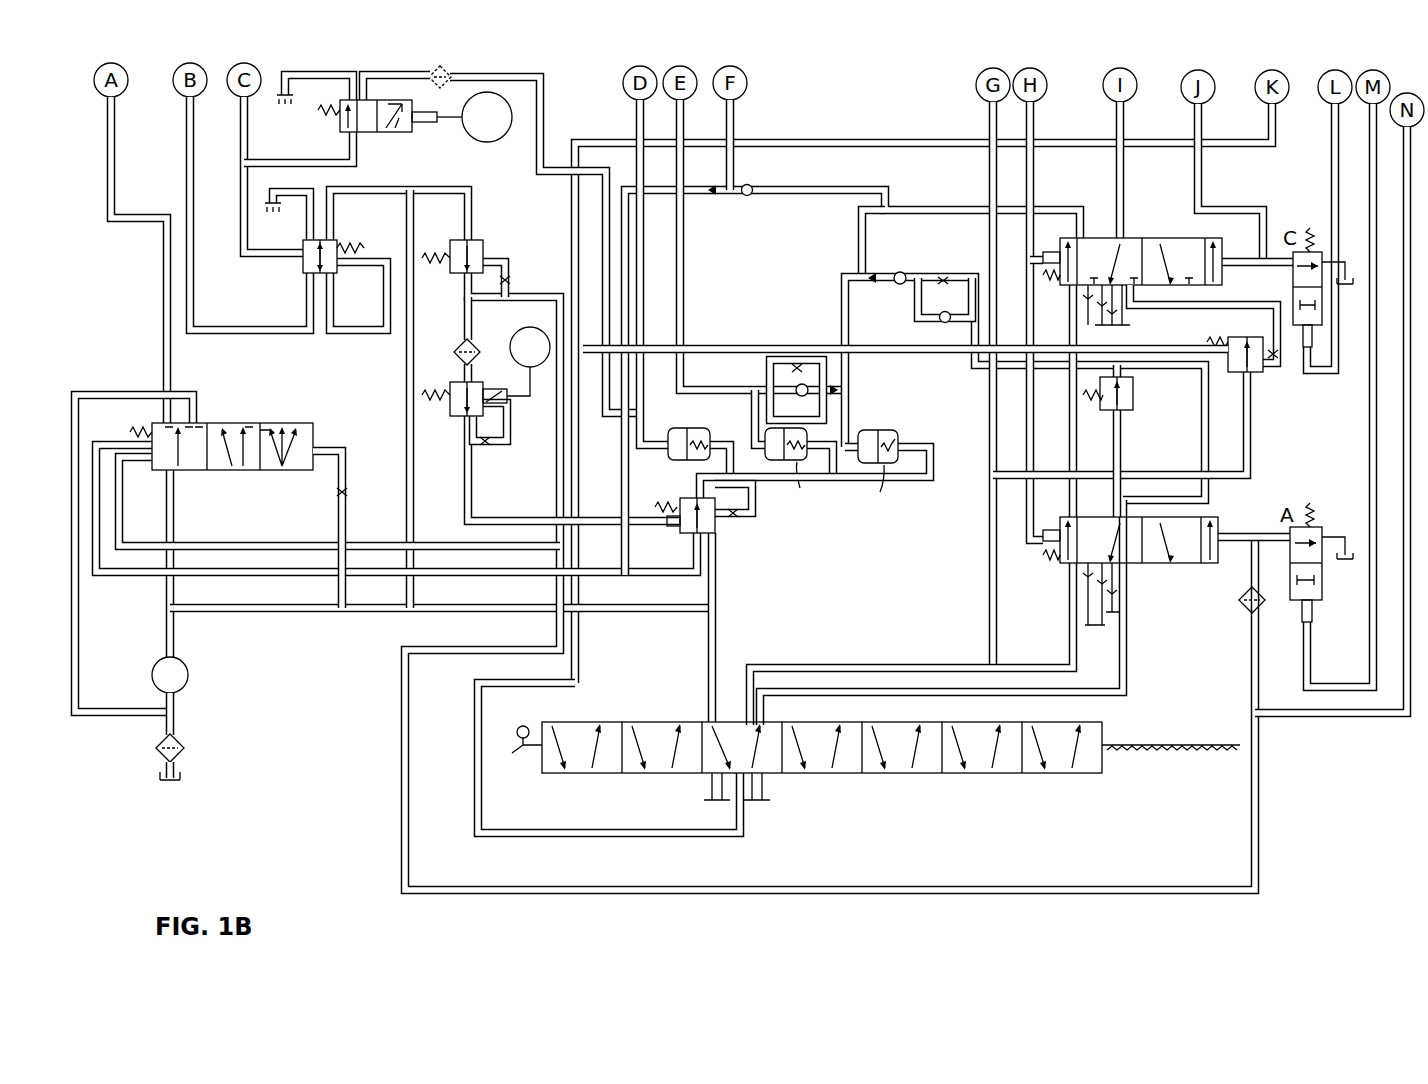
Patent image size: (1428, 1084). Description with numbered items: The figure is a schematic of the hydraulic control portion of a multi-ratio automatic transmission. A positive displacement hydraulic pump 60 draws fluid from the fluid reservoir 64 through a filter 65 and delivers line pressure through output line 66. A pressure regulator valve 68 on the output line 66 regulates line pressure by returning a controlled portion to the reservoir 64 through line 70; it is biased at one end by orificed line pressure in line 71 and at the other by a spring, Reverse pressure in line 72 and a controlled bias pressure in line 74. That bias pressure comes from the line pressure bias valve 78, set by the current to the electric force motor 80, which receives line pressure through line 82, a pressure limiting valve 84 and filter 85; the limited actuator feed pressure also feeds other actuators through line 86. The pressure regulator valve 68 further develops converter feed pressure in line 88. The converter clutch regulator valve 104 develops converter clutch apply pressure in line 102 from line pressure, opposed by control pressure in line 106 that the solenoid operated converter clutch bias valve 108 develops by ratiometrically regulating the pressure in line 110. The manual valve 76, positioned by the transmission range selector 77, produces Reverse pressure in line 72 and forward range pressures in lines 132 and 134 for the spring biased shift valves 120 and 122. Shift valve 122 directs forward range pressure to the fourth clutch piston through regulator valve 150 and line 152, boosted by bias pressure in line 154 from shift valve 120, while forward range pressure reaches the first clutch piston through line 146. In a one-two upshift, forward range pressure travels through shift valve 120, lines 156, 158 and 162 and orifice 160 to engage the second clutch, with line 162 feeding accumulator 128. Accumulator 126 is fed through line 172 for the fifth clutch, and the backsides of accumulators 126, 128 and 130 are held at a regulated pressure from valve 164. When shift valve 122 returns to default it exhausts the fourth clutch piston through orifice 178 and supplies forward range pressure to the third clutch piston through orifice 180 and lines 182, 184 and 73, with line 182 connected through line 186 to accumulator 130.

The hydraulic pump 60 is at (188, 675).
The fluid reservoir 64 is at (178, 788).
The filter 65 is at (184, 748).
The output line 66 is at (292, 614).
The pressure regulator valve 68 is at (232, 472).
The line 70 is at (78, 622).
The line 71 is at (326, 455).
The line 72 is at (232, 572).
The line 73 is at (736, 117).
The line 74 is at (270, 546).
The manual valve 76 is at (892, 774).
The transmission range selector 77 is at (507, 754).
The line pressure bias valve 78 is at (449, 412).
The electric force motor 80 is at (505, 398).
The line 82 is at (406, 375).
The pressure limiting valve 84 is at (458, 290).
The filter 85 is at (454, 352).
The line 86 is at (400, 750).
The line 88 is at (160, 298).
The line 102 is at (185, 147).
The TCC regulator valve 104 is at (303, 286).
The line 106 is at (318, 156).
The TCC bias valve 108 is at (362, 134).
The line 110 is at (545, 130).
The shift valve 120 is at (1215, 518).
The shift valve 122 is at (1172, 240).
The accumulator 126 is at (700, 428).
The accumulator 128 is at (806, 455).
The accumulator 130 is at (882, 430).
The DR pressure supply line 132 is at (1249, 410).
The line 134 is at (952, 690).
The line 146 is at (990, 162).
The regulator valve 150 is at (1258, 376).
The line 152 is at (1118, 211).
The line 154 is at (1200, 410).
The line 156 is at (968, 436).
The line 158 is at (1070, 432).
The orifice 160 is at (797, 355).
The line 162 is at (684, 277).
The valve 164 is at (712, 536).
The line 172 is at (644, 210).
The orifice 178 is at (1135, 300).
The orifice 180 is at (1070, 293).
The line 182 is at (912, 215).
The line 184 is at (797, 193).
The line 186 is at (849, 300).